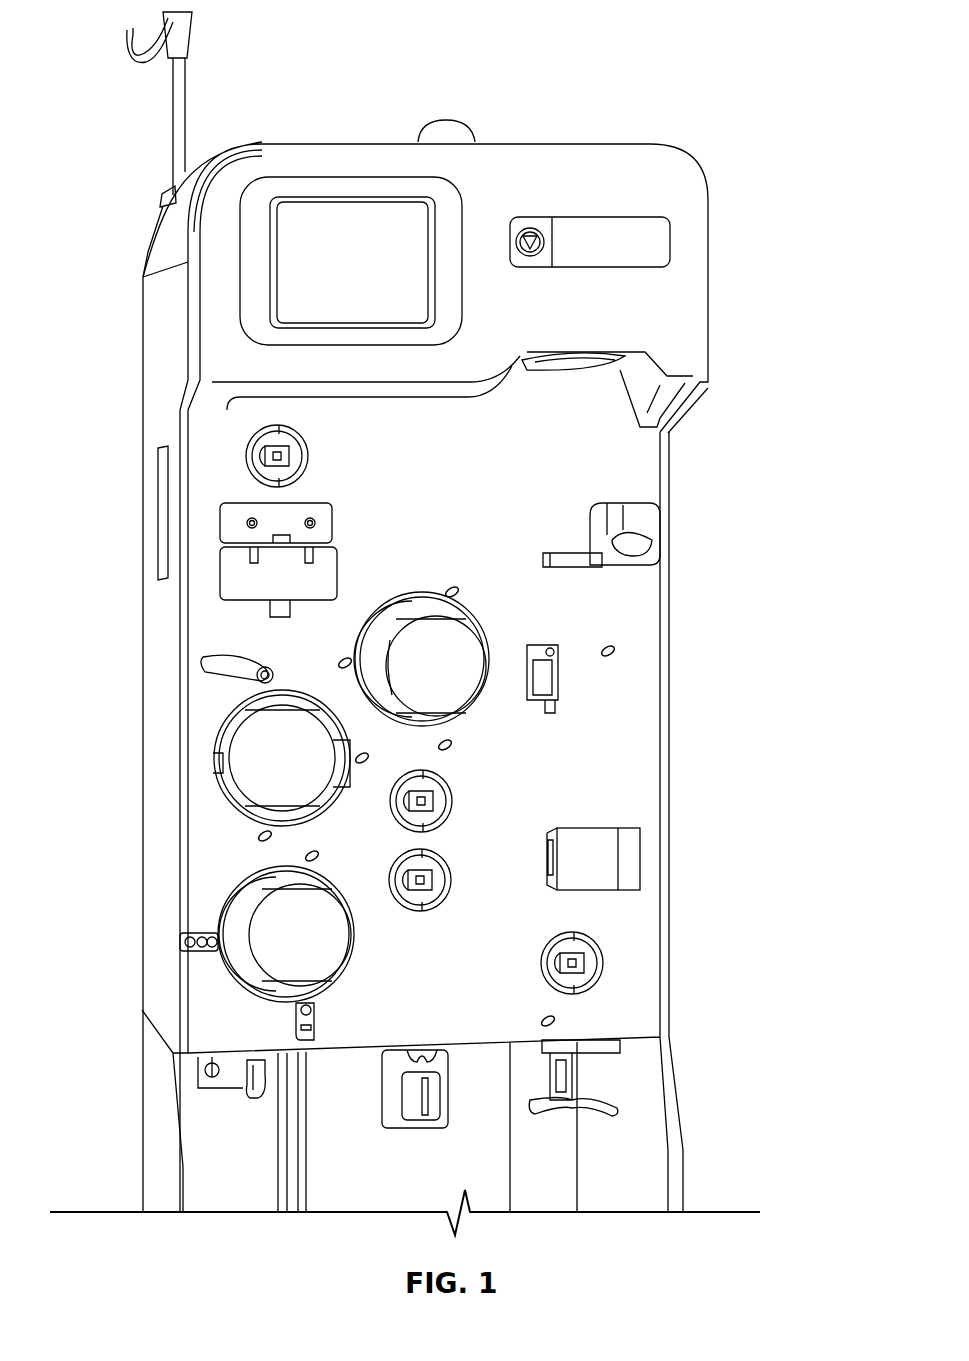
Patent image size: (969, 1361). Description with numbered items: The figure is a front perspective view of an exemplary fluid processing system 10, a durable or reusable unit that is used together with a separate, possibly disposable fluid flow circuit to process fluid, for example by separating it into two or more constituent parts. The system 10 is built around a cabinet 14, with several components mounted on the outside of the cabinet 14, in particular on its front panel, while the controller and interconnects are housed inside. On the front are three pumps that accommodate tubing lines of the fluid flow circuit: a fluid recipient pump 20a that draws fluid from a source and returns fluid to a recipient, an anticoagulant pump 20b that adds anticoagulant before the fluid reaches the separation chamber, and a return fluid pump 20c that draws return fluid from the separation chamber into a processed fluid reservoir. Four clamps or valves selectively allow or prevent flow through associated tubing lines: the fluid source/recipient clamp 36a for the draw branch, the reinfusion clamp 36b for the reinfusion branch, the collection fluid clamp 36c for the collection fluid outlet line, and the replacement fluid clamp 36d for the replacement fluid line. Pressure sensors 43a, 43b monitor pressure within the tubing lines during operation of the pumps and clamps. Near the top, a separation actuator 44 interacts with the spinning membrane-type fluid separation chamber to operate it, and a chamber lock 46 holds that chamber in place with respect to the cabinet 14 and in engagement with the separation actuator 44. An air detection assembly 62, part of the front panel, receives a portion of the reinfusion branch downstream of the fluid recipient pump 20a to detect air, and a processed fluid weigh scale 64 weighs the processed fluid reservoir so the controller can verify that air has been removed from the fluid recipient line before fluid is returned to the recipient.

The fluid processing system 10 is at (158, 563).
The cabinet 14 is at (697, 287).
The separation actuator 44 is at (607, 363).
The chamber lock 46 is at (650, 525).
The fluid source/recipient clamp 36a is at (452, 798).
The reinfusion clamp 36b is at (452, 878).
The collection fluid clamp 36c is at (595, 965).
The replacement fluid clamp 36d is at (275, 457).
The pressure sensor 43a is at (240, 523).
The pressure sensor 43b is at (302, 512).
The fluid recipient pump 20a is at (272, 937).
The anticoagulant pump 20b is at (248, 770).
The return fluid pump 20c is at (458, 648).
The processed fluid weigh scale 64 is at (557, 688).
The air detection assembly 62 is at (383, 1115).